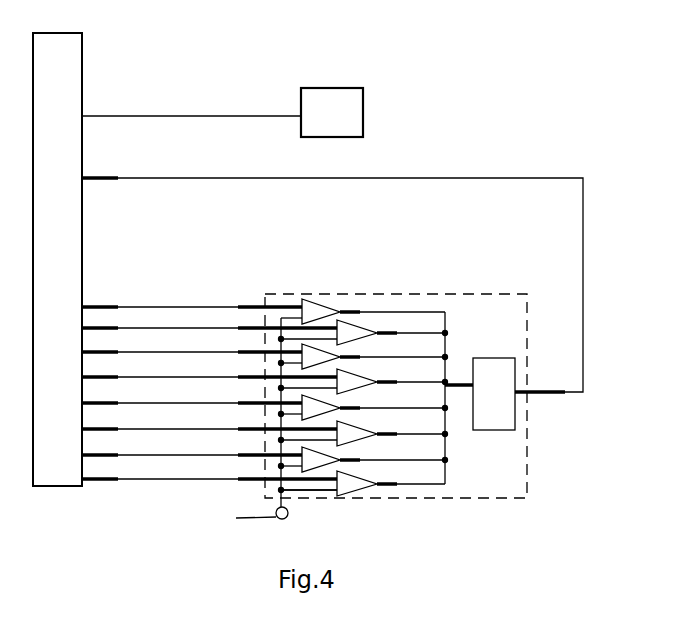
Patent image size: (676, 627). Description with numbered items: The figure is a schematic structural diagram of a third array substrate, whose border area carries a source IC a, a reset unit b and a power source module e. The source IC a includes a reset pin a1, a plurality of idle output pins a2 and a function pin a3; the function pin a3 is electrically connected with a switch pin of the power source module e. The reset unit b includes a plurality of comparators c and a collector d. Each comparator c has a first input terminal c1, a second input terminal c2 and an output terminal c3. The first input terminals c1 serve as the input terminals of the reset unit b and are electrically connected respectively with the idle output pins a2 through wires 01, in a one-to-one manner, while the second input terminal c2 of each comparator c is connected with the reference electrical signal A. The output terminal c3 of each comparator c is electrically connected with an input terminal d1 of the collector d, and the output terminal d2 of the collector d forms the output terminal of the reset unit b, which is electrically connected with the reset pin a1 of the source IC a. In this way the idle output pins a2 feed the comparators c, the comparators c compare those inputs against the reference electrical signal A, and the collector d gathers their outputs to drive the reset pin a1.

The source IC a is at (83, 240).
The reset pin a1 is at (101, 176).
The idle output pins a2 is at (93, 305).
The function pin a3 is at (93, 115).
The wires 01 is at (173, 305).
The reset unit b is at (410, 294).
The comparator c is at (316, 305).
The first input terminal c1 is at (253, 305).
The second input terminal c2 is at (328, 491).
The output terminal of the comparator c3 is at (386, 486).
The collector d is at (492, 368).
The input terminal of the collector d1 is at (453, 383).
The output terminal of the collector d2 is at (545, 390).
The power source module e is at (338, 88).
The reference electrical signal A is at (252, 518).